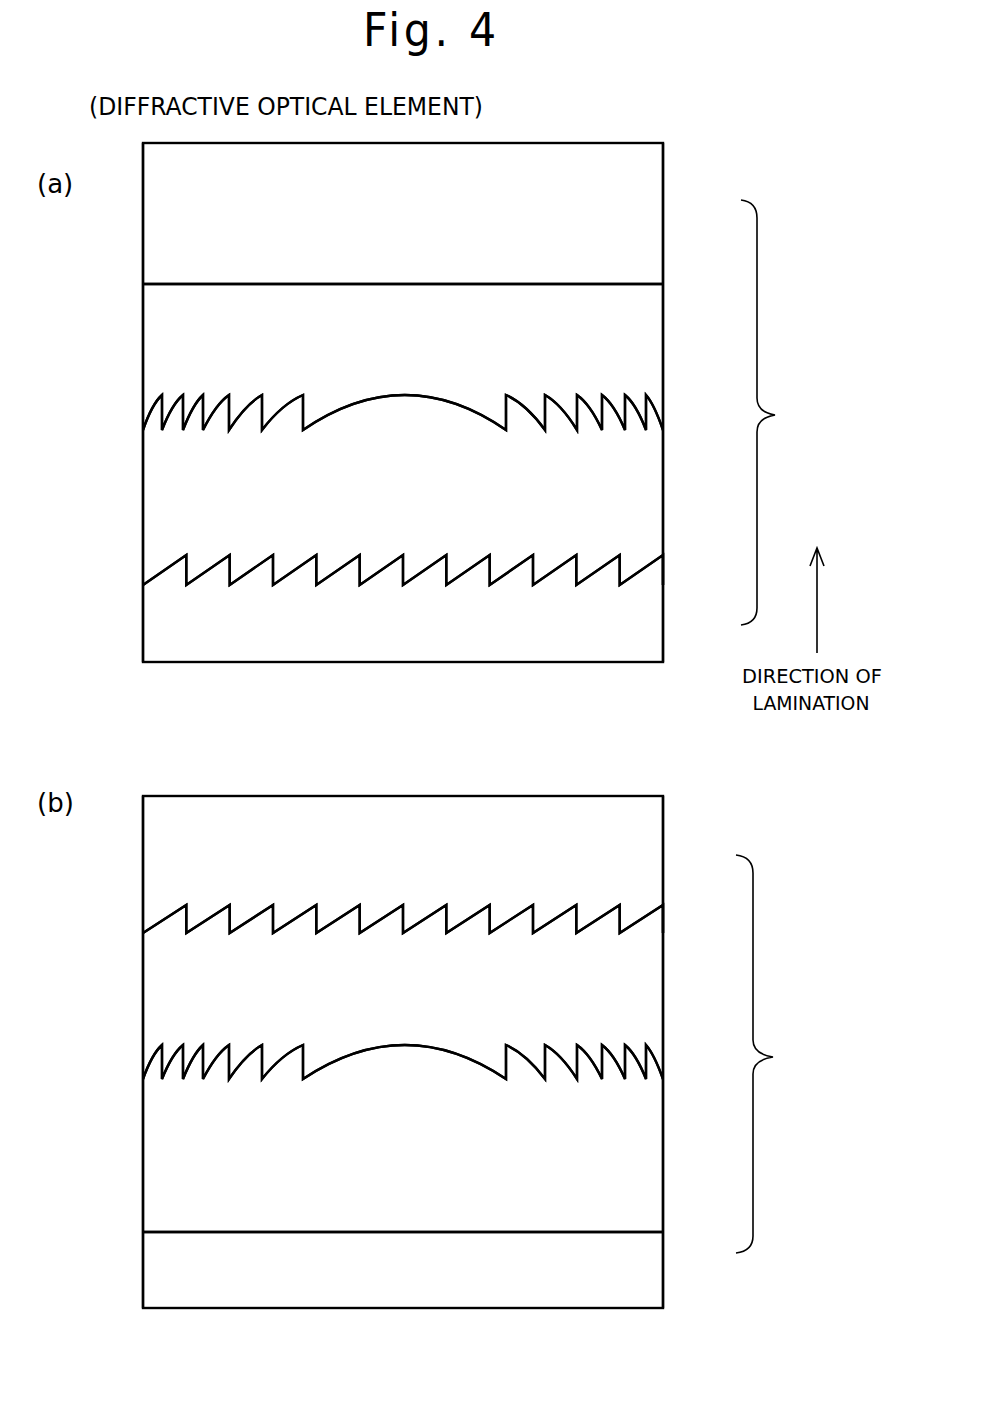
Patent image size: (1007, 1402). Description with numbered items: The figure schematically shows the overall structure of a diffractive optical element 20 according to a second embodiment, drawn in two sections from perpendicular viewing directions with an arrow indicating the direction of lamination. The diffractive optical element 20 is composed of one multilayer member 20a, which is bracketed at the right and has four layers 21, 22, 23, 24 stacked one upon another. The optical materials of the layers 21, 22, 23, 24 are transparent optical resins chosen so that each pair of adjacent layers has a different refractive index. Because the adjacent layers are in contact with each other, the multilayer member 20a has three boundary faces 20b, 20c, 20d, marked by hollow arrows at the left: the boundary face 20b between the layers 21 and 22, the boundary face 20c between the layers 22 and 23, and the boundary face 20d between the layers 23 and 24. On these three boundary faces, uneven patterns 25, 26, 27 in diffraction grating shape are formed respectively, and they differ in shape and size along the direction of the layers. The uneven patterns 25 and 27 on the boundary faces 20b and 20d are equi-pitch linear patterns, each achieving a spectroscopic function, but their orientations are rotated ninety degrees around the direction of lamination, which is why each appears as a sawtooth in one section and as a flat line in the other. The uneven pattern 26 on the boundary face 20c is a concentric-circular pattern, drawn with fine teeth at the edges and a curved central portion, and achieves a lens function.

The diffractive optical element 20 is at (88, 119).
The multilayer member 20a is at (784, 726).
The boundary face 20b is at (112, 571).
The boundary face 20c is at (112, 414).
The boundary face 20d is at (112, 271).
The layer 21 is at (651, 607).
The layer 22 is at (651, 490).
The layer 23 is at (651, 350).
The layer 24 is at (651, 225).
The uneven pattern 25 is at (350, 546).
The uneven pattern 26 is at (351, 388).
The uneven pattern 27 is at (349, 250).